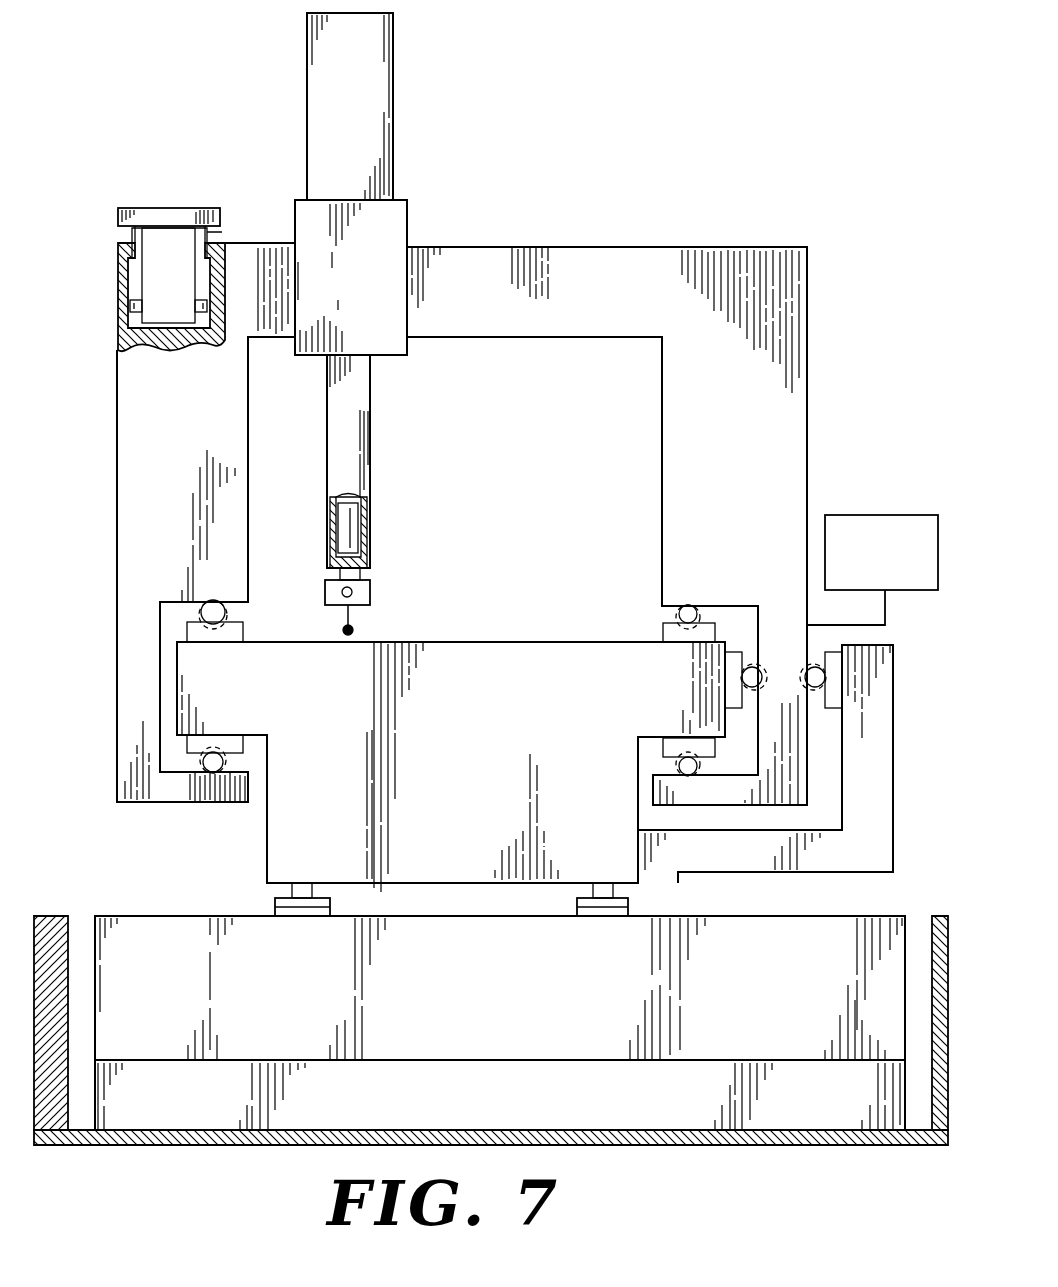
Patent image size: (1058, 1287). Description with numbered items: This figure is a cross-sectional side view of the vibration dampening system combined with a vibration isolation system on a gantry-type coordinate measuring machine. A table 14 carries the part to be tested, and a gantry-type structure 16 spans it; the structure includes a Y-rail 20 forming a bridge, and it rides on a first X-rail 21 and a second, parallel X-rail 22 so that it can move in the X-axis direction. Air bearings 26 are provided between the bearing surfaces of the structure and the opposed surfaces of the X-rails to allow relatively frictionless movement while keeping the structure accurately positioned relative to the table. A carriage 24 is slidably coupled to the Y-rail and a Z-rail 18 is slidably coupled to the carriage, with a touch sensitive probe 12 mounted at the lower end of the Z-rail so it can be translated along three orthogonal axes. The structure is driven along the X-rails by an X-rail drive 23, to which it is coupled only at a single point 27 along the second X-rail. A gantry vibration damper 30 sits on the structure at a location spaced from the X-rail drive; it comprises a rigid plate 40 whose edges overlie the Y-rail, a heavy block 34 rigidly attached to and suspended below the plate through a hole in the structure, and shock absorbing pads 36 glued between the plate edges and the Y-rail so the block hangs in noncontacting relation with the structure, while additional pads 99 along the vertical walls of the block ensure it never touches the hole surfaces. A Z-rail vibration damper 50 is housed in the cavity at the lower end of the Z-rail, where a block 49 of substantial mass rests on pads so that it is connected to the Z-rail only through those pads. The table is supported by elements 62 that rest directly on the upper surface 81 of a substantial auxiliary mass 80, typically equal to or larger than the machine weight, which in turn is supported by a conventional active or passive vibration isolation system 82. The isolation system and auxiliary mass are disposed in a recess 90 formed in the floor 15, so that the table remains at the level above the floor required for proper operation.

The touch sensitive probe 12 is at (370, 592).
The table 14 is at (478, 708).
The floor 15 is at (585, 1130).
The gantry-type structure 16 is at (808, 330).
The Z-rail 18 is at (360, 411).
The Y-rail 20 is at (528, 247).
The first X-rail 21 is at (222, 684).
The second X-rail 22 is at (672, 708).
The X-rail drive 23 is at (858, 515).
The carriage 24 is at (407, 215).
The air bearings 26 is at (226, 612).
The coupling point 27 is at (808, 620).
The gantry vibration damper 30 is at (148, 208).
The block 34 is at (160, 238).
The shock absorbing pads 36 is at (222, 234).
The plate 40 is at (172, 208).
The block 49 is at (360, 532).
The Z-rail vibration damper 50 is at (272, 540).
The elements 62 is at (275, 905).
The auxiliary mass 80 is at (526, 1007).
The upper surface 81 is at (412, 916).
The vibration isolation system 82 is at (526, 1102).
The recess 90 is at (72, 912).
The additional pads 99 is at (130, 306).